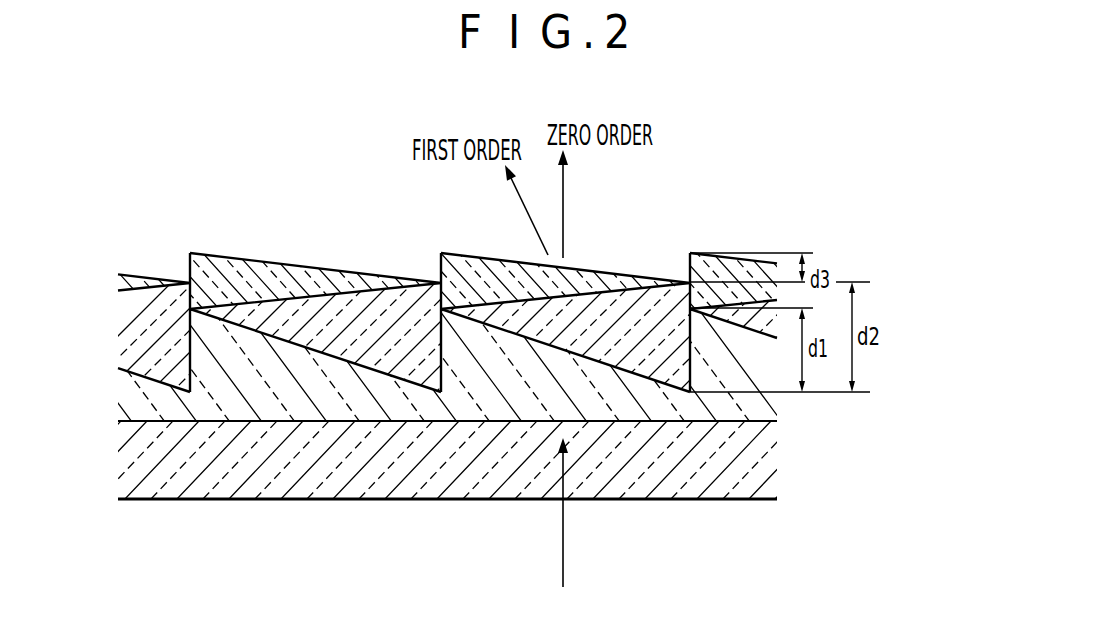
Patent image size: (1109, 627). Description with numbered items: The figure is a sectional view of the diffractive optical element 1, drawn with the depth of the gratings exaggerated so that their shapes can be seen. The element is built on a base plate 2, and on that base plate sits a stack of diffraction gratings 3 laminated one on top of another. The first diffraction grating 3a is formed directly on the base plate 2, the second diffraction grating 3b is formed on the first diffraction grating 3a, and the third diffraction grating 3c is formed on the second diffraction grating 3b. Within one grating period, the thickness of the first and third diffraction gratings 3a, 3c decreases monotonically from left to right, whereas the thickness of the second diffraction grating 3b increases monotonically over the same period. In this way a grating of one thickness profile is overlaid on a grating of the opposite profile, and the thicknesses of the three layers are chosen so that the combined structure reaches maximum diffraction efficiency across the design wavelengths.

The diffractive optical element 1 is at (499, 367).
The base plate 2 is at (755, 453).
The diffraction gratings 3 is at (471, 367).
The first diffraction grating 3a is at (292, 402).
The second diffraction grating 3b is at (401, 322).
The third diffraction grating 3c is at (268, 285).